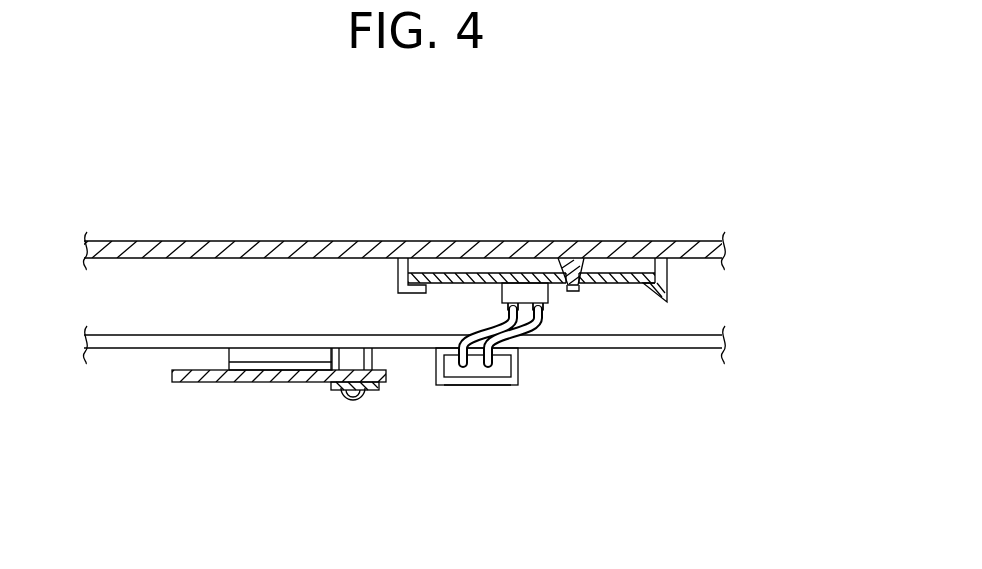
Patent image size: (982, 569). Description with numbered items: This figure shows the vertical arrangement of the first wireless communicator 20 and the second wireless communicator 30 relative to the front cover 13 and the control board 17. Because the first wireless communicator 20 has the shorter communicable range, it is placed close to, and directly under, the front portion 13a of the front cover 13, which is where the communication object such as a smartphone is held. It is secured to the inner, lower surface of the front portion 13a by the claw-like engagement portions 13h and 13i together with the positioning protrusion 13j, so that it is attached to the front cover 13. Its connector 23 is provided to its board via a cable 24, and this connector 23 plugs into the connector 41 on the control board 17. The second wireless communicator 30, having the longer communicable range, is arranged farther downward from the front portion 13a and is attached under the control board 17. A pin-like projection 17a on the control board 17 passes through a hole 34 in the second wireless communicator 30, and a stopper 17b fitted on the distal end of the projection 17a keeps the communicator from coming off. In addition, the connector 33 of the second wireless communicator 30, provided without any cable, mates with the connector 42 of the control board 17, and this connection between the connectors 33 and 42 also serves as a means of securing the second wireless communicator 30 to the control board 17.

The front cover 13 is at (190, 238).
The front portion 13a is at (291, 246).
The claw-like engagement portion 13h is at (667, 280).
The claw-like engagement portion 13i is at (397, 275).
The positioning protrusion 13j is at (557, 272).
The control board 17 is at (634, 351).
The pin-like projection 17a is at (341, 393).
The stopper 17b is at (373, 391).
The first wireless communicator 20 is at (467, 269).
The connector 23 is at (514, 366).
The cable 24 is at (530, 318).
The second wireless communicator 30 is at (276, 361).
The connector 33 is at (269, 377).
The hole 34 is at (353, 372).
The connector 41 is at (480, 388).
The connector 42 is at (264, 354).